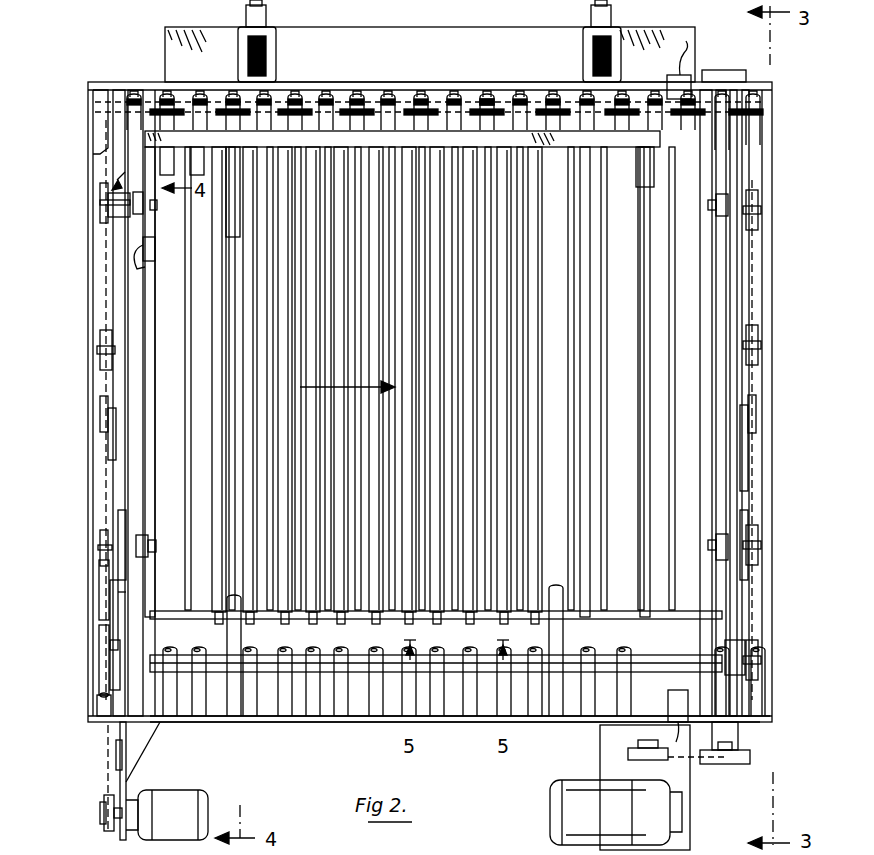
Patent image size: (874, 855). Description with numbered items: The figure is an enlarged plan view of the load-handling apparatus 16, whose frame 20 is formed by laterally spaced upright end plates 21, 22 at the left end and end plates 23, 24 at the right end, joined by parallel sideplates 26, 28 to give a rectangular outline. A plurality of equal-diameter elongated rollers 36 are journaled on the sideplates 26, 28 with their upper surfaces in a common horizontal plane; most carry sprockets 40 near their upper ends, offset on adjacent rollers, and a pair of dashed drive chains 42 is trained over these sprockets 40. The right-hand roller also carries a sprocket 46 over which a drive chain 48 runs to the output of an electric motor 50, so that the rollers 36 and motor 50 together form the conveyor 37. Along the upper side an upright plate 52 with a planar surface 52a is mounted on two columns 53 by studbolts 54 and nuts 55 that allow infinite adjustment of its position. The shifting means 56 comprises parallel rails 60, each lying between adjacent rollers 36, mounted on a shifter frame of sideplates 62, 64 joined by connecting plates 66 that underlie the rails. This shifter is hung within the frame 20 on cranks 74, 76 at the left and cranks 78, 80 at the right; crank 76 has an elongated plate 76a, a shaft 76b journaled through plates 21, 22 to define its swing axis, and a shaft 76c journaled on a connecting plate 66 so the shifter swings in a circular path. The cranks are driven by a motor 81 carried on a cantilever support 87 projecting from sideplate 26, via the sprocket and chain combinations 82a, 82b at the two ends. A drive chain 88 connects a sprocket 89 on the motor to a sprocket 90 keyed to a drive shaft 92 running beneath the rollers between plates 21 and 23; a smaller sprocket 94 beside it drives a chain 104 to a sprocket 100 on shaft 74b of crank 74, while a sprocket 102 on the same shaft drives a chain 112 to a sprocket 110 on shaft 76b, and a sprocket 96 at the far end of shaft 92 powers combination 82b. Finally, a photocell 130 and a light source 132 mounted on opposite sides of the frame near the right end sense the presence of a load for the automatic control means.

The load-handling apparatus 16 is at (58, 260).
The frame 20 is at (790, 588).
The upright end plate 21 is at (100, 280).
The upright end plate 22 is at (96, 298).
The upright end plate 23 is at (752, 386).
The upright end plate 24 is at (770, 394).
The sideplate 26 is at (244, 722).
The sideplate 28 is at (139, 80).
The elongated rollers 36 is at (392, 713).
The conveyor 37 is at (326, 720).
The sprockets 40 is at (104, 112).
The drive chains 42 is at (496, 102).
The sprocket 46 is at (748, 764).
The drive chain 48 is at (694, 758).
The electric motor 50 is at (579, 782).
The upright plate 52 is at (202, 148).
The planar surface 52a is at (264, 148).
The upright columns 53 is at (238, 39).
The studbolts 54 is at (248, 62).
The nuts 55 is at (276, 78).
The shifting means 56 is at (712, 284).
The rails 60 is at (584, 492).
The sideplate 62 is at (664, 618).
The sideplate 64 is at (652, 156).
The connecting plates 66 is at (146, 230).
The crank 74 is at (148, 560).
The shaft 74b is at (96, 518).
The crank 76 is at (110, 174).
The elongated plate 76a is at (117, 164).
The shaft 76b is at (98, 206).
The shaft 76c is at (144, 200).
The crank 78 is at (714, 528).
The crank 80 is at (718, 222).
The motor 81 is at (186, 792).
The sprocket and drive chain combination 82a is at (96, 392).
The sprocket and drive chain combination 82b is at (762, 410).
The cantilever support 87 is at (136, 752).
The drive chain 88 is at (99, 748).
The sprocket 89 is at (102, 798).
The sprocket 90 is at (80, 638).
The drive shaft 92 is at (217, 656).
The sprocket 94 is at (100, 696).
The sprocket 96 is at (758, 654).
The sprocket 100 is at (117, 512).
The sprocket 102 is at (100, 563).
The drive chain 104 is at (112, 596).
The sprocket 110 is at (100, 187).
The drive chain 112 is at (102, 234).
The photocell 130 is at (666, 733).
The light source 132 is at (688, 56).